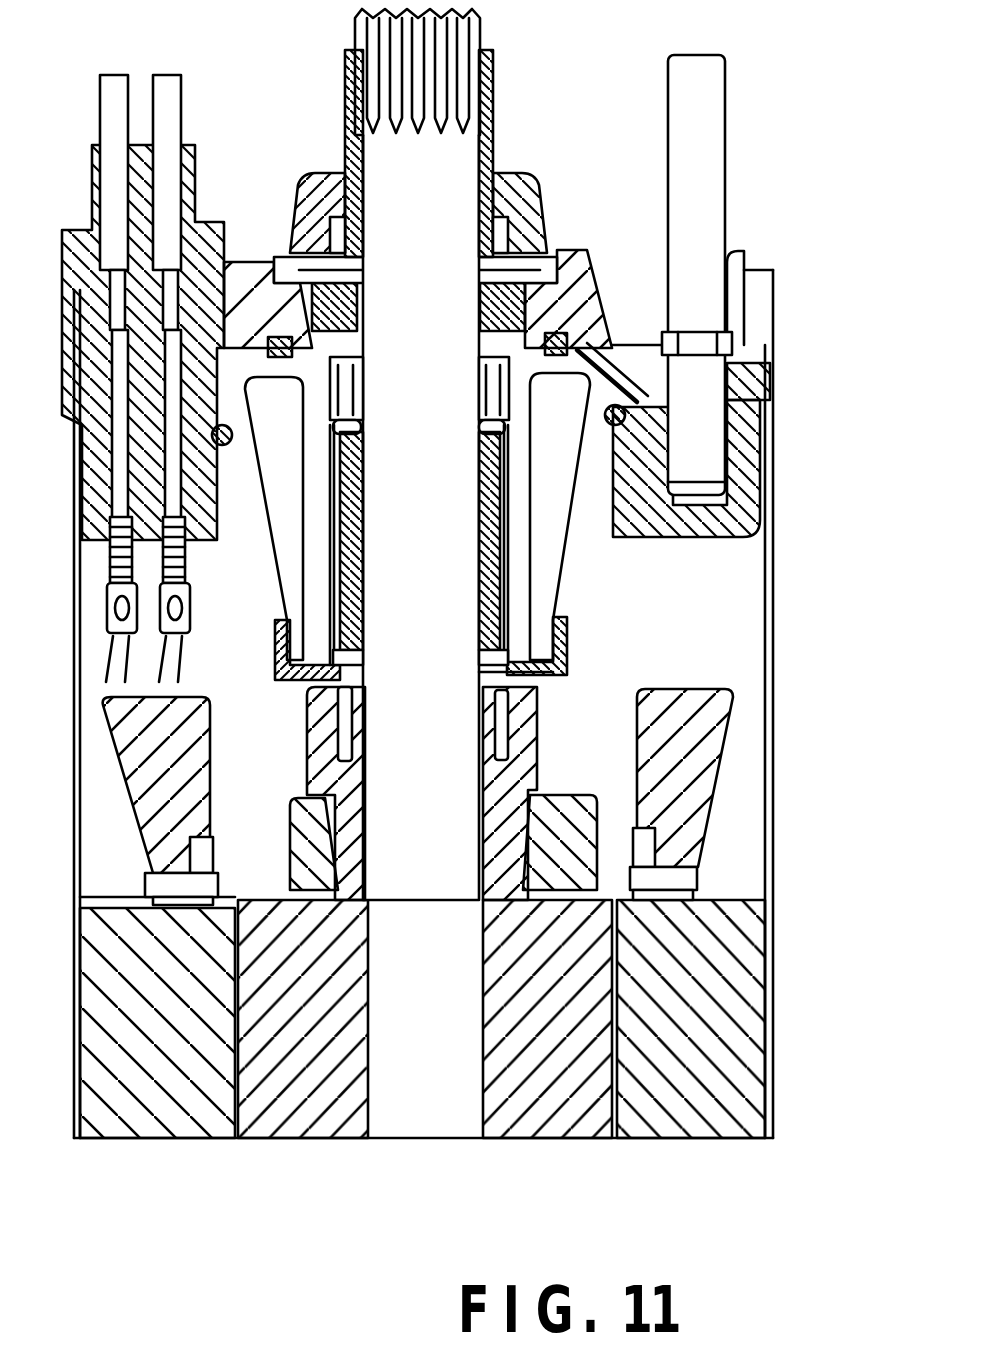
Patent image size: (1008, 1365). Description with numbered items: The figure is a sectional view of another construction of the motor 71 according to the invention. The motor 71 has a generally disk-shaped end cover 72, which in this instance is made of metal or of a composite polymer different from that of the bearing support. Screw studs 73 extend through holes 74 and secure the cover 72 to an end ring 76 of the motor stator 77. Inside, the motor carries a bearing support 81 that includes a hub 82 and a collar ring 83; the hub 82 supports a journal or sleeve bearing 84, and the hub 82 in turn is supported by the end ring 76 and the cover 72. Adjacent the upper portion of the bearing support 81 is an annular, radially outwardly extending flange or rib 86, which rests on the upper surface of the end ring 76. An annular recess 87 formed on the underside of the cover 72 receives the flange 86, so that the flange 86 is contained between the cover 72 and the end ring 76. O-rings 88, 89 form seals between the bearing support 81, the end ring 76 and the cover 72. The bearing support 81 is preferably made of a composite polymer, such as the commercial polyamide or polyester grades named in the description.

The motor 71 is at (776, 811).
The end cover 72 is at (773, 295).
The screw studs 73 is at (708, 95).
The holes 74 is at (748, 392).
The end ring 76 is at (745, 437).
The motor stator 77 is at (767, 577).
The bearing support 81 is at (562, 586).
The hub 82 is at (568, 619).
The collar ring 83 is at (552, 674).
The sleeve bearing 84 is at (322, 636).
The flange 86 is at (604, 518).
The annular recess 87 is at (640, 357).
The O-ring 88 is at (257, 420).
The O-ring 89 is at (556, 333).